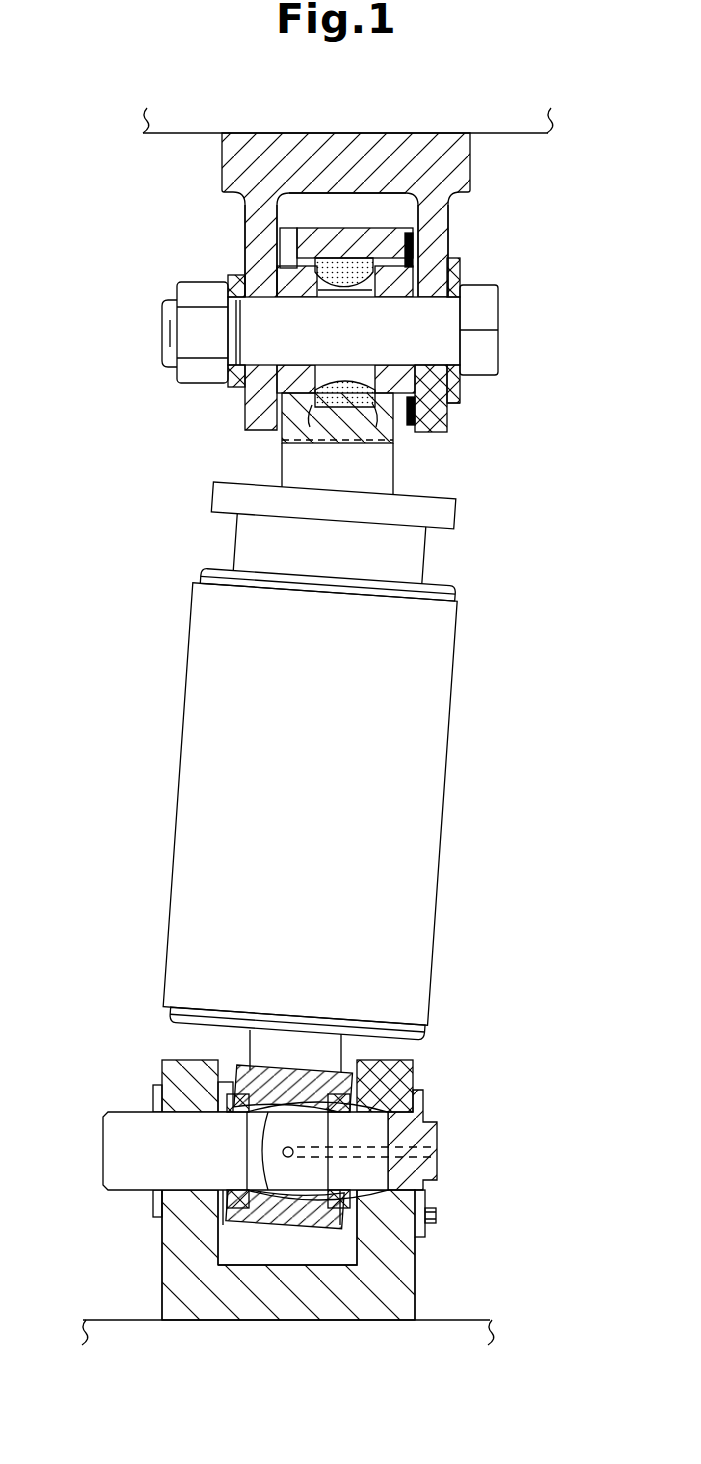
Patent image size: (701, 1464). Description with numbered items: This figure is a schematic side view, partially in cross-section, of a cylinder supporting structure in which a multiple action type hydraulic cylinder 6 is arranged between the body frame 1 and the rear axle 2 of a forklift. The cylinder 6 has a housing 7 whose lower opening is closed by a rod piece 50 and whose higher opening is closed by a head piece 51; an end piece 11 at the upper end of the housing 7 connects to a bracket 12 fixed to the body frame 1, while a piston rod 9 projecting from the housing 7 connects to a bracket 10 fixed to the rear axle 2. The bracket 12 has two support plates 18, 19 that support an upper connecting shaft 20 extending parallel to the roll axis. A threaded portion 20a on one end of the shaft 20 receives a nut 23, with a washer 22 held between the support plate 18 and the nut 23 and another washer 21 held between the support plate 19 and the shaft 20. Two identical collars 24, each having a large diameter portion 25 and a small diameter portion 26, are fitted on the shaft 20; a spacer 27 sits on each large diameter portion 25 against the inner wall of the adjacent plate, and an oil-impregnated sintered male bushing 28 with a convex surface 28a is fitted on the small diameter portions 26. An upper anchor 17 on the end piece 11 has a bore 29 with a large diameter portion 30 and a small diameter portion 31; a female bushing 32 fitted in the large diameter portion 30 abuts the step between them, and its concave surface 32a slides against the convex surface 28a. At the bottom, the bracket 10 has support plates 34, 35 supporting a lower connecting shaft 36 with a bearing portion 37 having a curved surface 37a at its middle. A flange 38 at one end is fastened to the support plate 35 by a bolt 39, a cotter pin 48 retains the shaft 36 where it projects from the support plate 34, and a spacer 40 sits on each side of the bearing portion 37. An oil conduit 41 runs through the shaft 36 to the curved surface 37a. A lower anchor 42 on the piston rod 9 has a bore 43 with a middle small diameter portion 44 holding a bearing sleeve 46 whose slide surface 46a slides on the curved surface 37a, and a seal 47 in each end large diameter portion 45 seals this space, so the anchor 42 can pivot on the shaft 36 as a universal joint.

The body frame 1 is at (533, 133).
The rear axle 2 is at (488, 1320).
The hydraulic cylinder 6 is at (465, 600).
The housing 7 is at (440, 828).
The piston rod 9 is at (340, 1046).
The bracket 10 is at (415, 1290).
The end piece 11 is at (393, 478).
The bracket 12 is at (222, 168).
The upper anchor 17 is at (362, 228).
The support plate 18 is at (245, 232).
The support plate 19 is at (440, 225).
The upper connecting shaft 20 is at (498, 305).
The threaded portion 20a is at (164, 302).
The washer 21 is at (458, 400).
The washer 22 is at (236, 388).
The nut 23 is at (187, 370).
The collar 24 is at (440, 270).
The large diameter portion 25 is at (306, 292).
The small diameter portion 26 is at (344, 331).
The spacer 27 is at (298, 236).
The male bushing 28 is at (365, 290).
The convex surface 28a is at (359, 446).
The bore 29 is at (436, 426).
The large diameter portion 30 is at (345, 260).
The small diameter portion 31 is at (390, 439).
The female bushing 32 is at (306, 444).
The concave surface 32a is at (380, 364).
The support plate 34 is at (162, 1245).
The support plate 35 is at (416, 1252).
The lower connecting shaft 36 is at (103, 1147).
The bearing portion 37 is at (262, 1174).
The curved surface 37a is at (246, 1122).
The flange 38 is at (426, 1192).
The bolt 39 is at (436, 1217).
The spacer 40 is at (228, 1076).
The oil conduit 41 is at (430, 1150).
The lower anchor 42 is at (162, 1256).
The bore 43 is at (358, 1212).
The small diameter portion 44 is at (310, 1214).
The large diameter portion 45 is at (238, 1096).
The bearing sleeve 46 is at (263, 1212).
The slide surface 46a is at (274, 1124).
The seal 47 is at (242, 1106).
The cotter pin 48 is at (152, 1090).
The rod piece 50 is at (416, 1038).
The head piece 51 is at (426, 550).